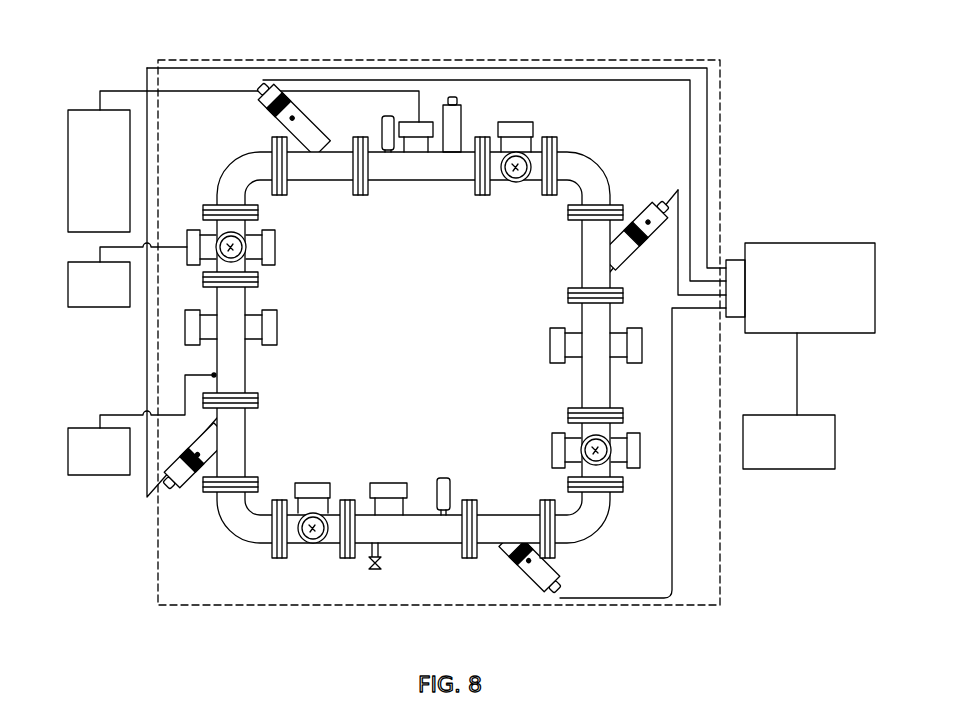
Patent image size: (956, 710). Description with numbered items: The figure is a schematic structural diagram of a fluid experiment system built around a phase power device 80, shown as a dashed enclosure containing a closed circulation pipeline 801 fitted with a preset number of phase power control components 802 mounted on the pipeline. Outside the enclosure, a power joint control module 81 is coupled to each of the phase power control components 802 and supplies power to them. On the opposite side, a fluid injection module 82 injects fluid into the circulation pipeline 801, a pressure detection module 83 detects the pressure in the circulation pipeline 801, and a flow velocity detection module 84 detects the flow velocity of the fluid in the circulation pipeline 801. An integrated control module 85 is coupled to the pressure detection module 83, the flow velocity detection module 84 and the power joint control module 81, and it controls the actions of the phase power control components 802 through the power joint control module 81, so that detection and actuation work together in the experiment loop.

The phase power device 80 is at (720, 215).
The circulation pipeline 801 is at (417, 163).
The phase power control component 802 is at (293, 118).
The power joint control module 81 is at (793, 276).
The fluid injection module 82 is at (93, 128).
The pressure detection module 83 is at (100, 445).
The flow velocity detection module 84 is at (94, 272).
The integrated control module 85 is at (800, 439).